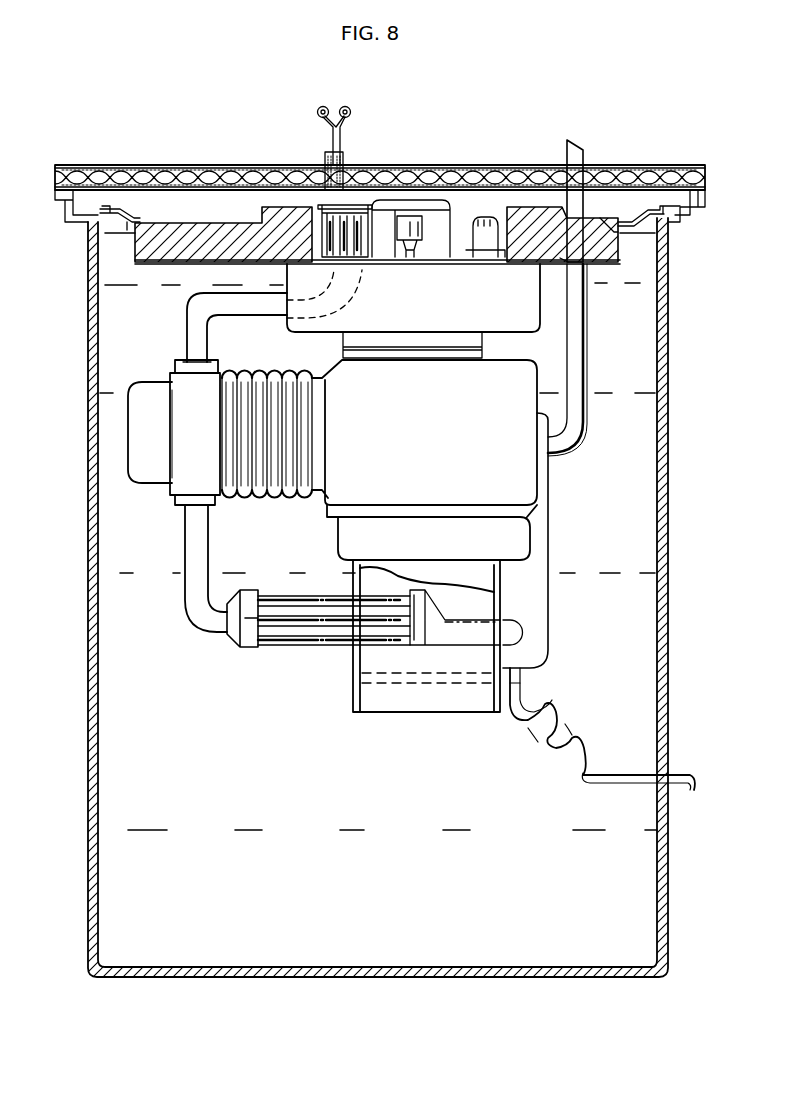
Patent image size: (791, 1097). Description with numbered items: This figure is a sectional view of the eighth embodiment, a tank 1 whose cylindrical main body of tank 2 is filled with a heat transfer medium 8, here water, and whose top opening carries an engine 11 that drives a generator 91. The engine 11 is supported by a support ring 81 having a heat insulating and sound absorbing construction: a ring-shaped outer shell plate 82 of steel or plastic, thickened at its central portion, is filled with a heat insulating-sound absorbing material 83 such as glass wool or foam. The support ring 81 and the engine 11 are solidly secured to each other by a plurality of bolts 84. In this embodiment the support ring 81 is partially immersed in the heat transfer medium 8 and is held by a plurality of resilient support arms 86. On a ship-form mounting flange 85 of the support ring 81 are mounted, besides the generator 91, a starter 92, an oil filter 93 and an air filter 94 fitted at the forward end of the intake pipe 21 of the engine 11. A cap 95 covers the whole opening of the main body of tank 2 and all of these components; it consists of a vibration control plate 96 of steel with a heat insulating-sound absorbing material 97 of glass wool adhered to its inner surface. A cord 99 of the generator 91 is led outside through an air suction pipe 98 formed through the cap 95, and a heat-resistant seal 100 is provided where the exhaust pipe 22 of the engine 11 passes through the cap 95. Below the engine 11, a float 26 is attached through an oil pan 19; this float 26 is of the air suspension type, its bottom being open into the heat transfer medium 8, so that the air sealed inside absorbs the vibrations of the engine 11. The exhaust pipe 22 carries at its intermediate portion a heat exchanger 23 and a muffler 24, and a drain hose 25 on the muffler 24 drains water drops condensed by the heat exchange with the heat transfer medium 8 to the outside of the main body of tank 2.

The tank 1 is at (676, 618).
The main body of tank 2 is at (666, 540).
The heat transfer medium 8 is at (659, 872).
The engine 11 is at (318, 498).
The oil pan 19 is at (338, 552).
The intake pipe 21 is at (208, 344).
The exhaust pipe 22 is at (583, 344).
The heat exchanger 23 is at (290, 648).
The muffler 24 is at (546, 618).
The drain hose 25 is at (544, 744).
The float 26 is at (352, 698).
The support ring 81 is at (110, 318).
The outer shell plate 82 is at (145, 268).
The heat insulating-sound absorbing material 83 is at (167, 268).
The bolts 84 is at (515, 270).
The mounting flange 85 is at (560, 285).
The resilient support arms 86 is at (126, 212).
The generator 91 is at (437, 266).
The starter 92 is at (446, 270).
The oil filter 93 is at (485, 266).
The air filter 94 is at (357, 266).
The cap 95 is at (657, 120).
The vibration control plate 96 is at (612, 165).
The heat insulating-sound absorbing material 97 is at (641, 172).
The air suction pipe 98 is at (342, 156).
The cord 99 is at (333, 134).
The heat-resistant seal 100 is at (565, 162).